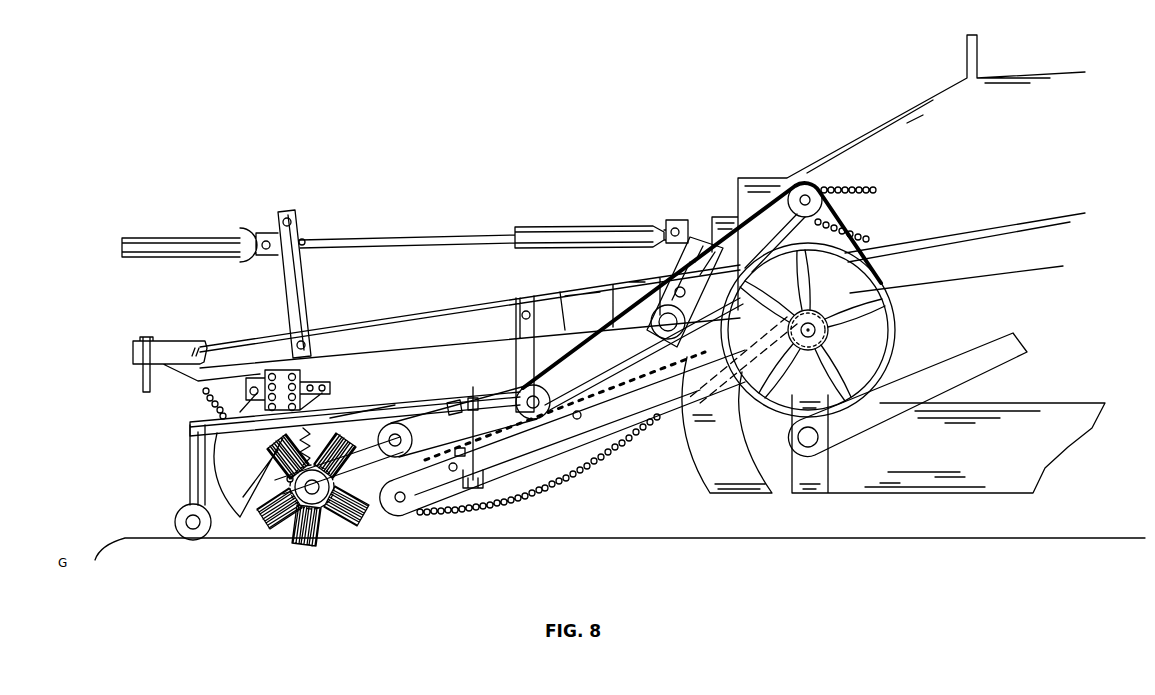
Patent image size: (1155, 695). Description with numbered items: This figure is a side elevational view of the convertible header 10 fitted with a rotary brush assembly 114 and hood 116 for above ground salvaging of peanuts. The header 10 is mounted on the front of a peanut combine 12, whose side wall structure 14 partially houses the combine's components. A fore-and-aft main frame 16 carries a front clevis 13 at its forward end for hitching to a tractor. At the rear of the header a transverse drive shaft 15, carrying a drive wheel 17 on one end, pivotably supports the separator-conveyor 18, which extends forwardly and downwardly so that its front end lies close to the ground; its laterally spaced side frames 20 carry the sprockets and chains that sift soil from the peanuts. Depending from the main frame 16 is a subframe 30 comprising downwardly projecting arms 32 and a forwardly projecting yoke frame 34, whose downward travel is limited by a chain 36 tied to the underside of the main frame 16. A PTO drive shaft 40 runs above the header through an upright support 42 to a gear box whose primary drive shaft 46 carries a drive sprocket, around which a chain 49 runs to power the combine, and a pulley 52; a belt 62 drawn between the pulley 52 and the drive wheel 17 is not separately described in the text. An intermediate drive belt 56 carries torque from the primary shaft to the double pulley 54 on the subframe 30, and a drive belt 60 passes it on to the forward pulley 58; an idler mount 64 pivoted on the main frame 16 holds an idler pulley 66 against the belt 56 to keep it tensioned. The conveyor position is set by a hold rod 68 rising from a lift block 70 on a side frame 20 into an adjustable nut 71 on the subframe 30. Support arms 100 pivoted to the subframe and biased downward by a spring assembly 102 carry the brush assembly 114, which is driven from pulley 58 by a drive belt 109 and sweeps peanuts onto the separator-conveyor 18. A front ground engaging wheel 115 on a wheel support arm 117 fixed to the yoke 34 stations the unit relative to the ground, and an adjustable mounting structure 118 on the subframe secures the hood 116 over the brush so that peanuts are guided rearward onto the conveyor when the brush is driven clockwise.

The convertible header 10 is at (472, 193).
The peanut combine 12 is at (916, 72).
The front clevis 13 is at (185, 342).
The side wall structure 14 is at (946, 322).
The drive shaft 15 is at (822, 328).
The main frame 16 is at (470, 316).
The drive wheel 17 is at (893, 338).
The separator-conveyor 18 is at (552, 494).
The side frames 20 is at (562, 433).
The subframe 30 is at (148, 428).
The downwardly projecting arms 32 is at (531, 354).
The yoke frame 34 is at (190, 424).
The chain 36 is at (202, 397).
The PTO drive shaft 40 is at (470, 237).
The support 42 is at (297, 308).
The primary drive shaft 46 is at (812, 202).
The chain 49 is at (880, 189).
The pulley 52 is at (815, 193).
The double pulley 54 is at (553, 400).
The intermediate drive belt 56 is at (616, 360).
The forward pulley 58 is at (414, 438).
The drive belt 60 is at (455, 402).
The drive belt 62 is at (872, 262).
The idler mount 64 is at (684, 253).
The idler pulley 66 is at (686, 326).
The hold rod 68 is at (455, 452).
The lift block 70 is at (484, 470).
The adjustable nut 71 is at (479, 409).
The support arms 100 is at (286, 482).
The spring assembly 102 is at (306, 446).
The drive belt 109 is at (378, 412).
The rotary brush assembly 114 is at (313, 522).
The front ground engaging wheel 115 is at (180, 522).
The hood 116 is at (248, 475).
The wheel support arm 117 is at (196, 465).
The adjustable mounting structure 118 is at (330, 381).